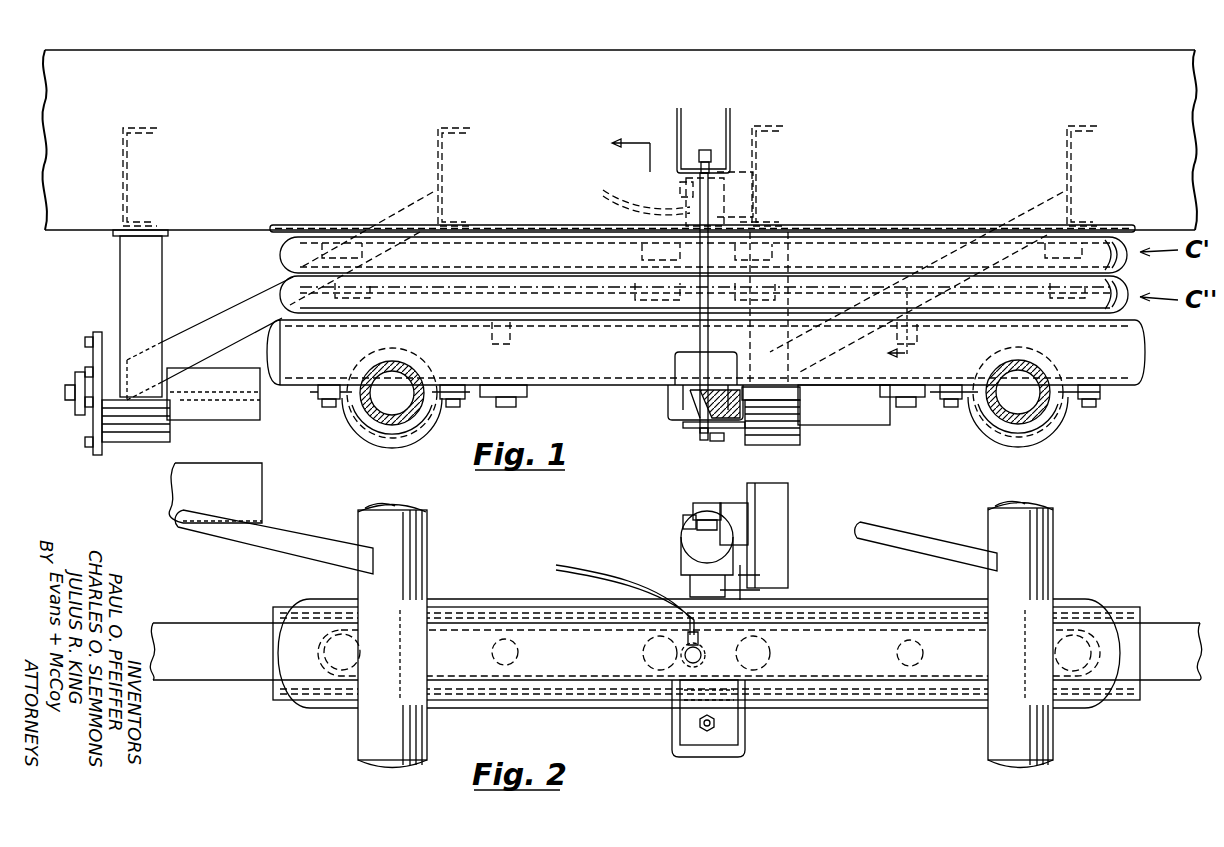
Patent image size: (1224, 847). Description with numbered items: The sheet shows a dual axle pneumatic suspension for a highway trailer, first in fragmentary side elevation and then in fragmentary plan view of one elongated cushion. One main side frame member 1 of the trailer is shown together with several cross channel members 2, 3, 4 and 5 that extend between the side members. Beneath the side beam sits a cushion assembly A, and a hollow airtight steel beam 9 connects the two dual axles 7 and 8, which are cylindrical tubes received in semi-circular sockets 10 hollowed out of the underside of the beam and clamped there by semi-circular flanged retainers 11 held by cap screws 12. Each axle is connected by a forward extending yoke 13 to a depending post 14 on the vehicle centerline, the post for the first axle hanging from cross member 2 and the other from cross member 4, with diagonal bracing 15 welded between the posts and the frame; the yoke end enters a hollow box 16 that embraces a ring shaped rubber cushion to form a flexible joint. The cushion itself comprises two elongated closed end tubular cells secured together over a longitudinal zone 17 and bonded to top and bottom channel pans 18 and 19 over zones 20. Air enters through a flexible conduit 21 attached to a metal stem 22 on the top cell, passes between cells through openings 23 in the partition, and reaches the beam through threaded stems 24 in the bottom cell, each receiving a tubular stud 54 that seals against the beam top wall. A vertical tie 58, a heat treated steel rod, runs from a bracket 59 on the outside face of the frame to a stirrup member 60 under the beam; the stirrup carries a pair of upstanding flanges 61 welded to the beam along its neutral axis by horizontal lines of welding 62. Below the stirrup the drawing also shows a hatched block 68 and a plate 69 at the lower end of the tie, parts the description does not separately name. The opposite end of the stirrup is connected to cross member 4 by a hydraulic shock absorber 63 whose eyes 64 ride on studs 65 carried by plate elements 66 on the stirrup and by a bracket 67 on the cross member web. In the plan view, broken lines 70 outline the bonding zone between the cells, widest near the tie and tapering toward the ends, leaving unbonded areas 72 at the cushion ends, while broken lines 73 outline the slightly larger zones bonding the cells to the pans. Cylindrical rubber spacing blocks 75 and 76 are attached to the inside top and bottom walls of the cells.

In FIG. 1, the main side frame member 1 is at (359, 107).
In FIG. 2, the main side frame member 1 is at (207, 632).
In FIG. 1, the cross member 2 is at (130, 162).
In FIG. 1, the cross member 3 is at (438, 152).
In FIG. 1, the cross member 4 is at (782, 140).
In FIG. 2, the cross member 4 is at (775, 540).
In FIG. 1, the cross member 5 is at (1082, 155).
In FIG. 1, the axle 7 is at (397, 445).
In FIG. 2, the axle 7 is at (428, 542).
In FIG. 1, the axle 8 is at (1040, 420).
In FIG. 2, the axle 8 is at (1045, 525).
In FIG. 1, the hollow beam 9 is at (1160, 352).
In FIG. 1, the semi-circular socket 10 is at (425, 368).
In FIG. 1, the flanged retainer 11 is at (352, 440).
In FIG. 1, the cap screw 12 is at (330, 410).
In FIG. 1, the yoke 13 is at (278, 415).
In FIG. 2, the yoke 13 is at (262, 552).
In FIG. 1, the post 14 is at (120, 282).
In FIG. 1, the diagonal bracing 15 is at (228, 312).
In FIG. 1, the hollow box 16 is at (135, 440).
In FIG. 1, the zone of connection 17 is at (544, 256).
In FIG. 1, the top channel pan 18 is at (967, 226).
In FIG. 1, the bottom channel pan 19 is at (1084, 330).
In FIG. 1, the bonding zone 20 is at (887, 225).
In FIG. 1, the flexible conduit 21 is at (603, 190).
In FIG. 2, the flexible conduit 21 is at (575, 568).
In FIG. 2, the metal stem 22 is at (682, 660).
In FIG. 1, the opening 23 is at (496, 268).
In FIG. 2, the opening 23 is at (518, 648).
In FIG. 1, the threaded metal stem 24 is at (492, 310).
In FIG. 1, the tubular stud 54 is at (503, 342).
In FIG. 1, the vertical tie 58 is at (675, 353).
In FIG. 2, the vertical tie 58 is at (706, 731).
In FIG. 1, the bracket 59 is at (728, 117).
In FIG. 2, the bracket 59 is at (745, 752).
In FIG. 1, the stirrup member 60 is at (668, 418).
In FIG. 2, the stirrup member 60 is at (745, 730).
In FIG. 1, the upstanding flange 61 is at (675, 395).
In FIG. 1, the horizontal line of welding 62 is at (675, 360).
In FIG. 1, the hydraulic shock absorber 63 is at (752, 220).
In FIG. 2, the hydraulic shock absorber 63 is at (683, 548).
In FIG. 1, the eye 64 is at (711, 150).
In FIG. 2, the eye 64 is at (702, 504).
In FIG. 1, the stud 65 is at (680, 184).
In FIG. 2, the stud 65 is at (683, 521).
In FIG. 2, the plate element 66 is at (745, 572).
In FIG. 1, the bracket 67 is at (752, 166).
In FIG. 2, the bracket 67 is at (735, 510).
In FIG. 1, the cam block 68 is at (690, 418).
In FIG. 1, the plate 69 is at (710, 436).
In FIG. 2, the broken lines 70 is at (990, 625).
In FIG. 2, the unbonded area 72 is at (310, 700).
In FIG. 2, the broken lines 73 is at (880, 620).
In FIG. 1, the rubber block 75 is at (380, 258).
In FIG. 2, the rubber block 75 is at (362, 648).
In FIG. 1, the rubber block 76 is at (635, 292).
In FIG. 2, the rubber block 76 is at (645, 645).
In FIG. 1, the cushion assembly A is at (876, 210).